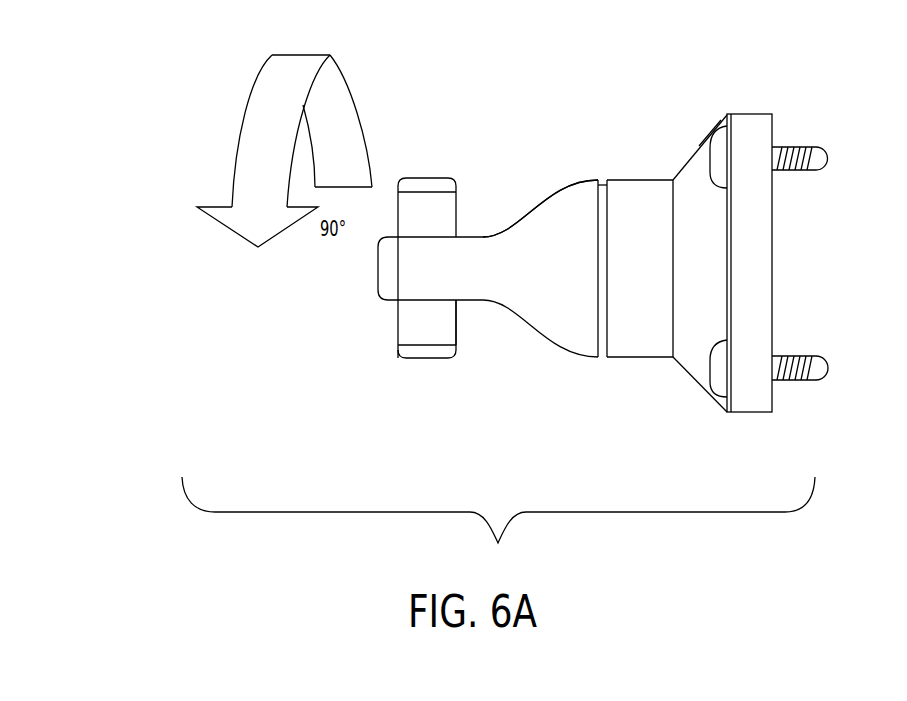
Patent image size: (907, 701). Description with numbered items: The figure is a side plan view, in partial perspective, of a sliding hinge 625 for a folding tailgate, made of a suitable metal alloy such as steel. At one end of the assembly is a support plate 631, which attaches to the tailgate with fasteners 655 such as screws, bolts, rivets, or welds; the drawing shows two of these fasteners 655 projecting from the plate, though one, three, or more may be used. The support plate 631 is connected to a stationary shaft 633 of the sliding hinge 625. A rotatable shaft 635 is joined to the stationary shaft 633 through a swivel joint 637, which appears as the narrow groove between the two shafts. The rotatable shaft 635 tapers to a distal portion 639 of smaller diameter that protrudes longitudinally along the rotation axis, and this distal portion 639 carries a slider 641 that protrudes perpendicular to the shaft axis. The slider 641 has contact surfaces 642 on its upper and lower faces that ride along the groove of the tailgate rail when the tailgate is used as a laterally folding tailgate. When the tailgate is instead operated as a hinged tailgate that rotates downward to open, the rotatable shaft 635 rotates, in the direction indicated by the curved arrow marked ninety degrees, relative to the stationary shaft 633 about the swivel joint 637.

The sliding hinge 625 is at (595, 113).
The support plate 631 is at (745, 112).
The stationary shaft 633 is at (638, 193).
The rotatable shaft 635 is at (556, 197).
The swivel joint 637 is at (602, 352).
The distal portion 639 is at (390, 278).
The slider 641 is at (456, 322).
The contact surfaces 642 is at (440, 218).
The fasteners 655 is at (808, 146).